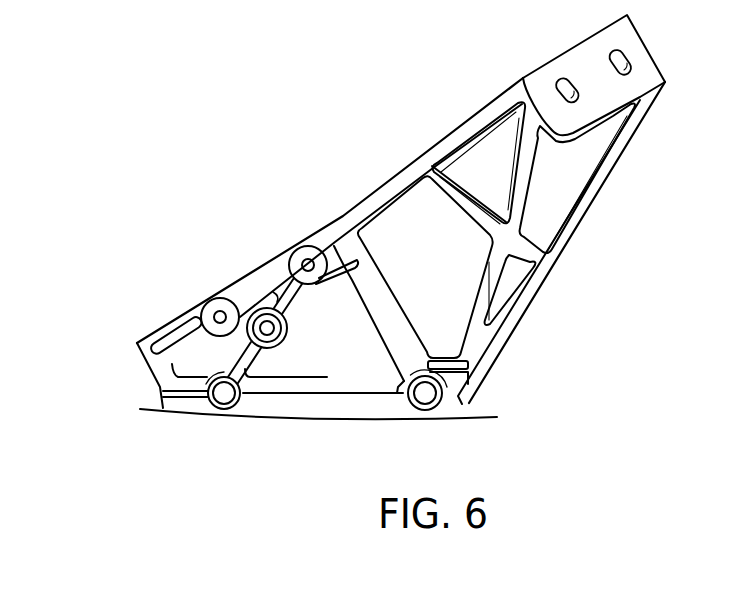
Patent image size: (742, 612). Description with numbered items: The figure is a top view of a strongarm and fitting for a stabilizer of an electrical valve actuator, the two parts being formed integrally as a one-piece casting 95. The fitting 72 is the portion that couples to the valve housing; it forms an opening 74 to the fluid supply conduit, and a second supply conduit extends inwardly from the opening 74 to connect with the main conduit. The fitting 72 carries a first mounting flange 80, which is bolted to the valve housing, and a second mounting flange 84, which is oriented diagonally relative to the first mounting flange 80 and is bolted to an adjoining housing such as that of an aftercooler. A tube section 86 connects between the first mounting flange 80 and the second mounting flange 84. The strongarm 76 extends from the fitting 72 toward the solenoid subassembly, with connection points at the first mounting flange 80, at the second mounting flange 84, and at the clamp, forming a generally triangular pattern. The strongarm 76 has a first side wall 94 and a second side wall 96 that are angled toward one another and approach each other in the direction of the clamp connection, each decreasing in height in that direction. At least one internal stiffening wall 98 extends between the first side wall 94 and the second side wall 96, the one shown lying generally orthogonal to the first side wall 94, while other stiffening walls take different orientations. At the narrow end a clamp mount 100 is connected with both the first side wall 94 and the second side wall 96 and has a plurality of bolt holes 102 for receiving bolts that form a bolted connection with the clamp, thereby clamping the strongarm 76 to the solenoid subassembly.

The fitting 72 is at (335, 428).
The opening 74 is at (155, 369).
The strongarm 76 is at (648, 246).
The first mounting flange 80 is at (157, 337).
The second mounting flange 84 is at (183, 403).
The tube section 86 is at (283, 372).
The first side wall 94 is at (402, 178).
The one-piece casting 95 is at (455, 400).
The second side wall 96 is at (528, 302).
The internal stiffening wall 98 is at (453, 190).
The clamp mount 100 is at (647, 42).
The bolt holes 102 is at (554, 90).